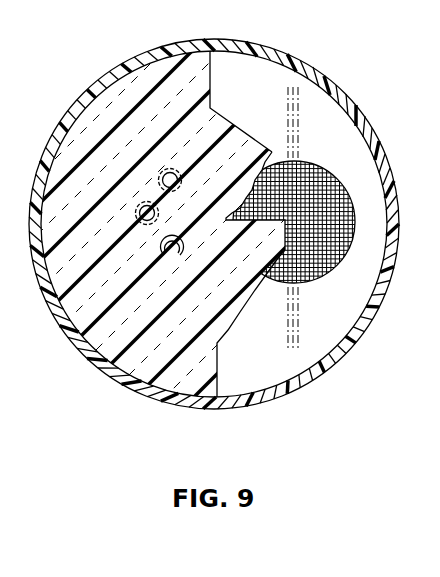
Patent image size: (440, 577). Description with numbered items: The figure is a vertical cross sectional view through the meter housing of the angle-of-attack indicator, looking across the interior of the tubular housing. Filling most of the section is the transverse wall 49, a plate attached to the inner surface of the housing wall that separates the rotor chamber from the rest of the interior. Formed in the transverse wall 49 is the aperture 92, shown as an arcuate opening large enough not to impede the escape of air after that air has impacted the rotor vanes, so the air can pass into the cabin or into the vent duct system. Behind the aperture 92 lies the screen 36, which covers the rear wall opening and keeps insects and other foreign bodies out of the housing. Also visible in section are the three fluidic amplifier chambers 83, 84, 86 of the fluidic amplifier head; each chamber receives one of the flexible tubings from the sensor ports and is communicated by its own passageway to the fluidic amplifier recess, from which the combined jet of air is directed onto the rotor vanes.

The aperture 92 is at (273, 362).
The transverse wall 49 is at (216, 112).
The screen 36 is at (305, 187).
The fluidic amplifier chamber 83 is at (137, 206).
The fluidic amplifier chamber 84 is at (160, 171).
The fluidic amplifier chamber 86 is at (163, 250).